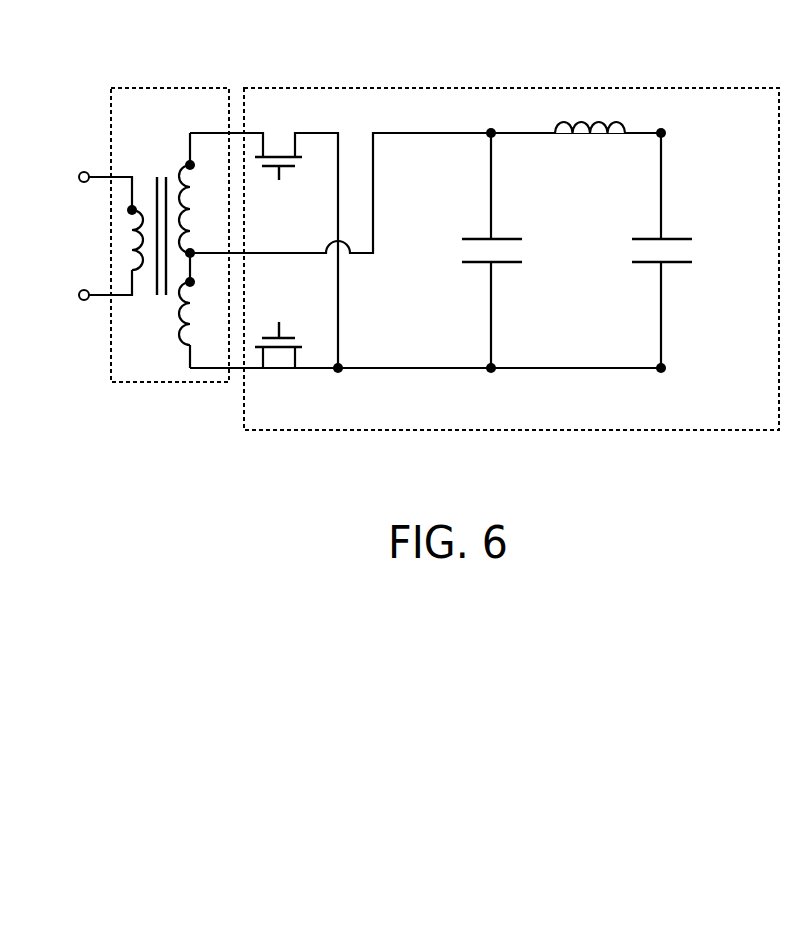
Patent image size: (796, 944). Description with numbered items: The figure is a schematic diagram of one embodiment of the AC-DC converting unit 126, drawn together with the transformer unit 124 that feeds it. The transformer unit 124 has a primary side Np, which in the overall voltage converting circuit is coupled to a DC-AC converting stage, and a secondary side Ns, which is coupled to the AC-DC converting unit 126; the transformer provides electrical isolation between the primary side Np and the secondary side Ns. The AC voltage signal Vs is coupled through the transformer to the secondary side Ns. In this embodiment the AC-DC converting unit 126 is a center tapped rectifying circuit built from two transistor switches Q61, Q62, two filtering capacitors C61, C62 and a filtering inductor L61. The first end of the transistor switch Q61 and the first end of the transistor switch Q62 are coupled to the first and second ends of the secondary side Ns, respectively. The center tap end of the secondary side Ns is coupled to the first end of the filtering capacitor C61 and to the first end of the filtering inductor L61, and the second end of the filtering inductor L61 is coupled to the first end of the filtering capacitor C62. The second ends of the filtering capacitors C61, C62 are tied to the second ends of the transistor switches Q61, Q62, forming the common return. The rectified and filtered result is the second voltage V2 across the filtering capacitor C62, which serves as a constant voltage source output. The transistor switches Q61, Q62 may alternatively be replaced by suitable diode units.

The transformer unit 124 is at (198, 88).
The AC-DC converting unit 126 is at (545, 88).
The primary side Np is at (127, 219).
The secondary side Ns is at (189, 236).
The AC voltage signal Vs is at (80, 236).
The transistor switch Q61 is at (290, 179).
The transistor switch Q62 is at (290, 365).
The filtering capacitor C61 is at (502, 250).
The filtering inductor L61 is at (590, 148).
The filtering capacitor C62 is at (646, 250).
The second voltage V2 is at (718, 253).